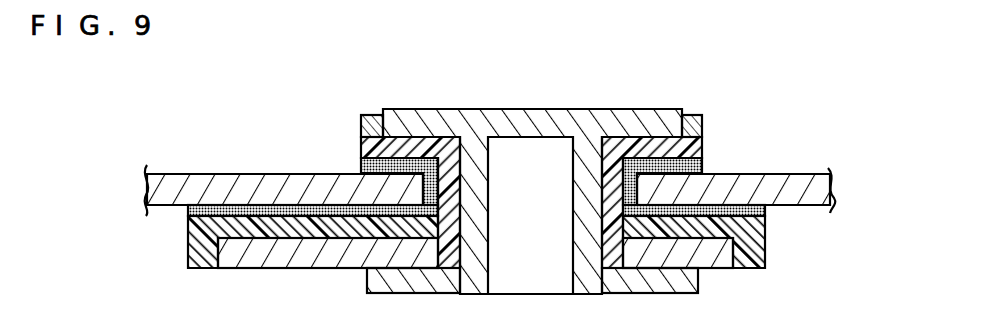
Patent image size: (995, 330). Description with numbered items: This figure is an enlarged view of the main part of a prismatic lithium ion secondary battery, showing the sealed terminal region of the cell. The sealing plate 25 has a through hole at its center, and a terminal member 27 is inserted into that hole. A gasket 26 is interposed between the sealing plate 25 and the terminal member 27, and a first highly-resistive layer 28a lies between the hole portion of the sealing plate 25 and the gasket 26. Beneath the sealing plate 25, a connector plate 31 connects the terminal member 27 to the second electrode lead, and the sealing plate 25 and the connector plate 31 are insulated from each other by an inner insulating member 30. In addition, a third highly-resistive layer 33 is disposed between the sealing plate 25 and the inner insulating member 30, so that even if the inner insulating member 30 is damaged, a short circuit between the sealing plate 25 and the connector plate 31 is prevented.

The sealing plate 25 is at (810, 186).
The gasket 26 is at (703, 118).
The terminal member 27 is at (552, 109).
The first highly-resistive layer 28a is at (700, 150).
The inner insulating member 30 is at (748, 247).
The connector plate 31 is at (710, 268).
The third highly-resistive layer 33 is at (765, 213).